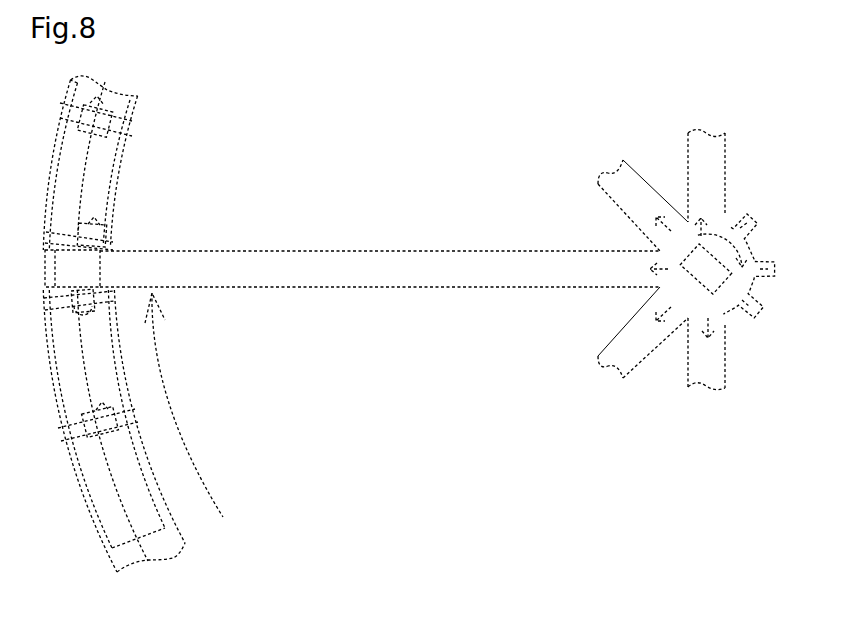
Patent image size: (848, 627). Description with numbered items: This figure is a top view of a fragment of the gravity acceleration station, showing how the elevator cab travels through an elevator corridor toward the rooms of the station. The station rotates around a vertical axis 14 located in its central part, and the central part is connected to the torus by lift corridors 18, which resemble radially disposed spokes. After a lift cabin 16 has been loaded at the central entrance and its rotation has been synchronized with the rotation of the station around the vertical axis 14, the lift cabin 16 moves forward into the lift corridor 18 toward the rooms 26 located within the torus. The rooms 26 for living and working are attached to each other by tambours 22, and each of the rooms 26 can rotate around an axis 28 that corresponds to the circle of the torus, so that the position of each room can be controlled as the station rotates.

The vertical axis 14 is at (706, 268).
The lift cabin 16 is at (689, 188).
The lift corridors 18 is at (388, 249).
The tambour connecting rooms 22 is at (45, 300).
The rooms for living and working 26 is at (100, 523).
The axis for rotation of the rooms 28 is at (86, 332).